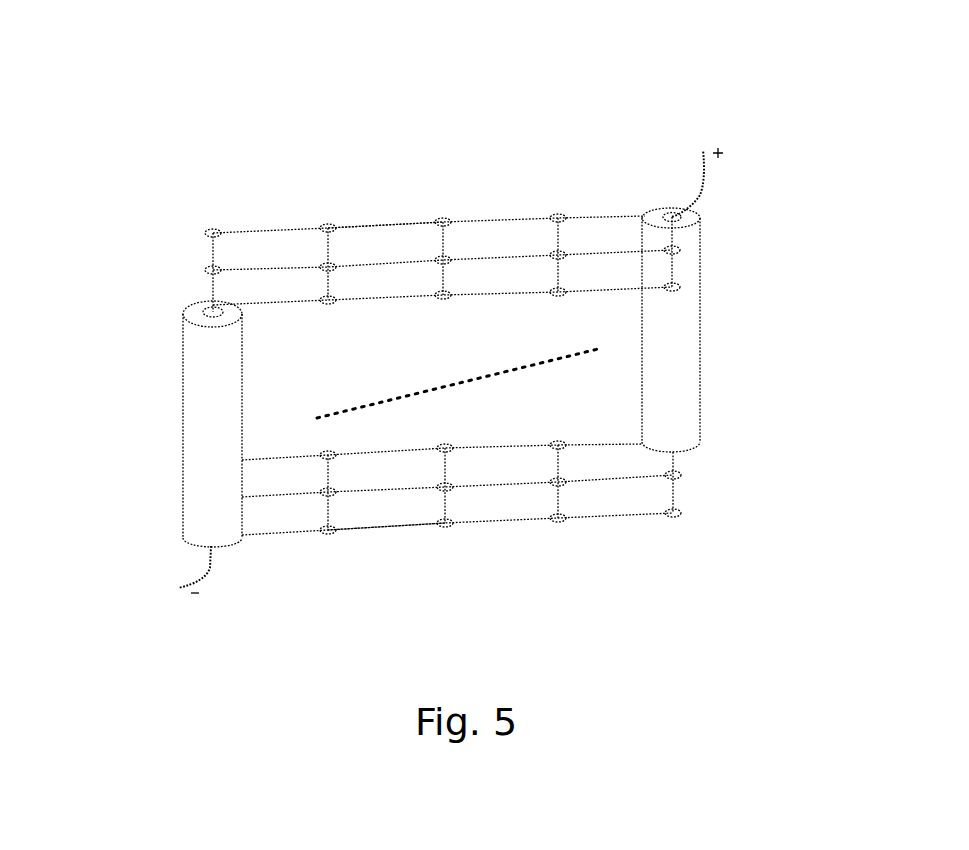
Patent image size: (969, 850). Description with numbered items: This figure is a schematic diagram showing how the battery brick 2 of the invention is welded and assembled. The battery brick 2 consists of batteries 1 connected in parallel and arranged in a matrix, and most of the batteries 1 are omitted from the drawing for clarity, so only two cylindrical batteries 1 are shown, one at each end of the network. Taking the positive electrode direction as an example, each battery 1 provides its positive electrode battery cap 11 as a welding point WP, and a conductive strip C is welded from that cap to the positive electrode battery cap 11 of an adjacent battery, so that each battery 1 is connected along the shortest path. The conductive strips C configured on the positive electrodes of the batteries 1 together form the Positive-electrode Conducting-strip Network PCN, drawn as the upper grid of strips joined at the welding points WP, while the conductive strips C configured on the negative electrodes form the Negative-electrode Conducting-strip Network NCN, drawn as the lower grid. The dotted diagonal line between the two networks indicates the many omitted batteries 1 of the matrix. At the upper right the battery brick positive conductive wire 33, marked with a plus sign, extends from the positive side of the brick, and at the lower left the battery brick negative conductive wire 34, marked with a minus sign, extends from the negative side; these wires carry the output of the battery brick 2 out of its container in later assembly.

The battery brick 2 is at (252, 44).
The battery 1 is at (182, 433).
The positive electrode battery cap 11 is at (186, 318).
The battery brick positive conductive wire 33 is at (713, 183).
The battery brick negative conductive wire 34 is at (205, 566).
The Positive-electrode Conducting-strip Network PCN is at (368, 214).
The Negative-electrode Conducting-strip Network NCN is at (491, 551).
The welding point WP is at (205, 235).
The conductive strip C is at (497, 222).